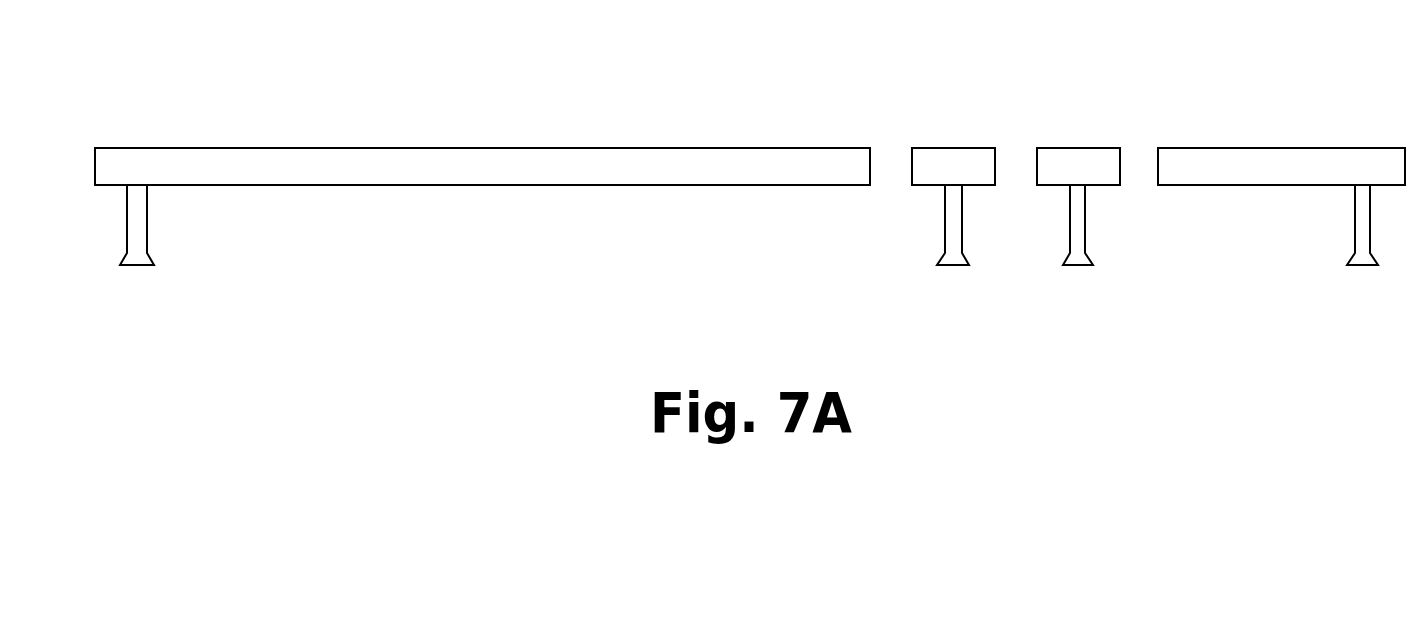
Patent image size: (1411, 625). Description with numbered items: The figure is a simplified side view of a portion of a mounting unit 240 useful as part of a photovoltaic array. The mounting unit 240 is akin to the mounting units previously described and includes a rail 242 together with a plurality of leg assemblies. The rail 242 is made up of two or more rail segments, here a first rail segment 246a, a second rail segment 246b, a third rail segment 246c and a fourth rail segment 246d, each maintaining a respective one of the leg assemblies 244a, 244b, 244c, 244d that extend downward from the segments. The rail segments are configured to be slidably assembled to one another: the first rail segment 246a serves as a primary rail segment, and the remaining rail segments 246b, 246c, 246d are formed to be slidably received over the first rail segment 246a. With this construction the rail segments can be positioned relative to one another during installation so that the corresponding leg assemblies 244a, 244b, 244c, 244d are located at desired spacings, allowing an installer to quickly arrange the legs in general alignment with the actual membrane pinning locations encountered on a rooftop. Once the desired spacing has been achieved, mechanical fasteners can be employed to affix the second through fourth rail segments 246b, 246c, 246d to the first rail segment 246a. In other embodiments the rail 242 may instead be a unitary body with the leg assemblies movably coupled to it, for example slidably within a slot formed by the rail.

The mounting unit 240 is at (698, 60).
The rail 242 is at (1180, 142).
The leg assembly 244a is at (152, 205).
The leg assembly 244b is at (937, 223).
The leg assembly 244c is at (1088, 230).
The leg assembly 244d is at (1353, 227).
The first rail segment 246a is at (372, 160).
The second rail segment 246b is at (928, 173).
The third rail segment 246c is at (1052, 175).
The fourth rail segment 246d is at (1300, 157).